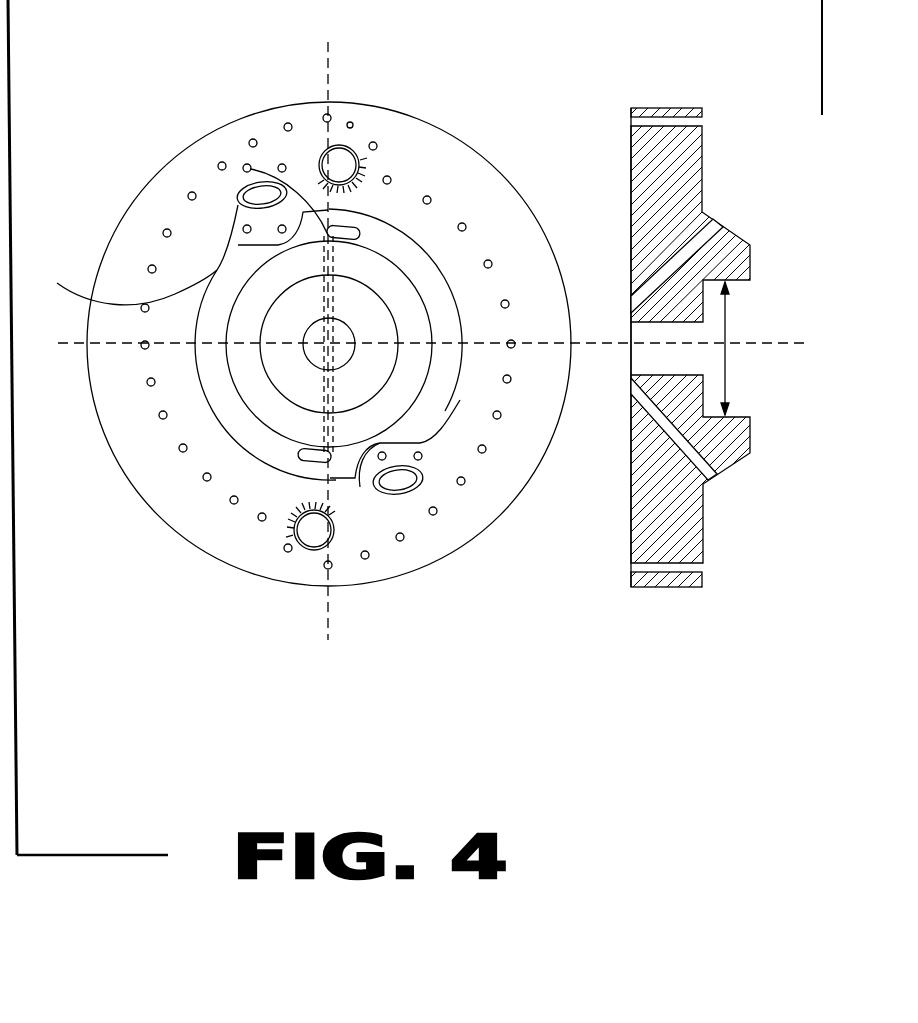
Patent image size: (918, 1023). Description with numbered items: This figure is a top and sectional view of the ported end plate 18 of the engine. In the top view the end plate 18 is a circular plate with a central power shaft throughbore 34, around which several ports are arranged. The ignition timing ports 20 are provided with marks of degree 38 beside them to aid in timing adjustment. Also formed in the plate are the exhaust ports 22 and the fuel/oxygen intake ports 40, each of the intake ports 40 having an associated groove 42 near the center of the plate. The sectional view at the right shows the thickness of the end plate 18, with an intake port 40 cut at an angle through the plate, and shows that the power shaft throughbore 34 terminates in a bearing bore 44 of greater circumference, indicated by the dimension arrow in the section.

The ported end plate 18 is at (160, 174).
The ignition timing ports 20 is at (320, 163).
The exhaust ports 22 is at (373, 483).
The power shaft throughbore 34 is at (669, 332).
The marks of degree 38 is at (366, 164).
The fuel/oxygen intake ports 40 is at (250, 169).
The grooves 42 is at (340, 236).
The bearing bore 44 is at (727, 335).